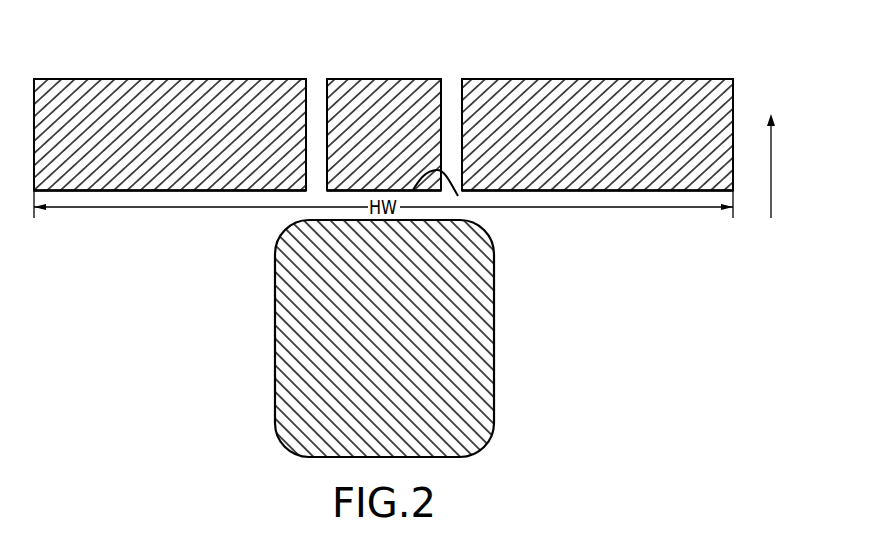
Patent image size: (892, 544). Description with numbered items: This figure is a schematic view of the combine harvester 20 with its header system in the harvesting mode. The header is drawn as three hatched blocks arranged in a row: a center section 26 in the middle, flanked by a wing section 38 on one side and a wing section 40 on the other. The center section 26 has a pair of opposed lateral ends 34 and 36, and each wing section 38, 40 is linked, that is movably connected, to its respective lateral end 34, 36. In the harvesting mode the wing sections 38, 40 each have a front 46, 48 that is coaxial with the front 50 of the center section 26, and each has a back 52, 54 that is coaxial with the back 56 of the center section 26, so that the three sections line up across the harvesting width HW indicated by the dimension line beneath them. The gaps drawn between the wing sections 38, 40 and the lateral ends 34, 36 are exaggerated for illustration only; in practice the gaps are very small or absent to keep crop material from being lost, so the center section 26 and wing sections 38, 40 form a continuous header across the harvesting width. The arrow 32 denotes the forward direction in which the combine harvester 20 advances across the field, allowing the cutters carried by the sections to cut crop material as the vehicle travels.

The combine harvester 20 is at (517, 325).
The center section 26 is at (422, 100).
The forward direction arrow 32 is at (773, 173).
The lateral end 34 is at (327, 108).
The lateral end 36 is at (441, 107).
The wing section 38 is at (180, 93).
The wing section 40 is at (638, 78).
The front of wing section 46 is at (237, 78).
The front of wing section 48 is at (558, 78).
The front of center section 50 is at (383, 78).
The back of wing section 52 is at (277, 191).
The back of wing section 54 is at (690, 190).
The back of center section 56 is at (458, 196).